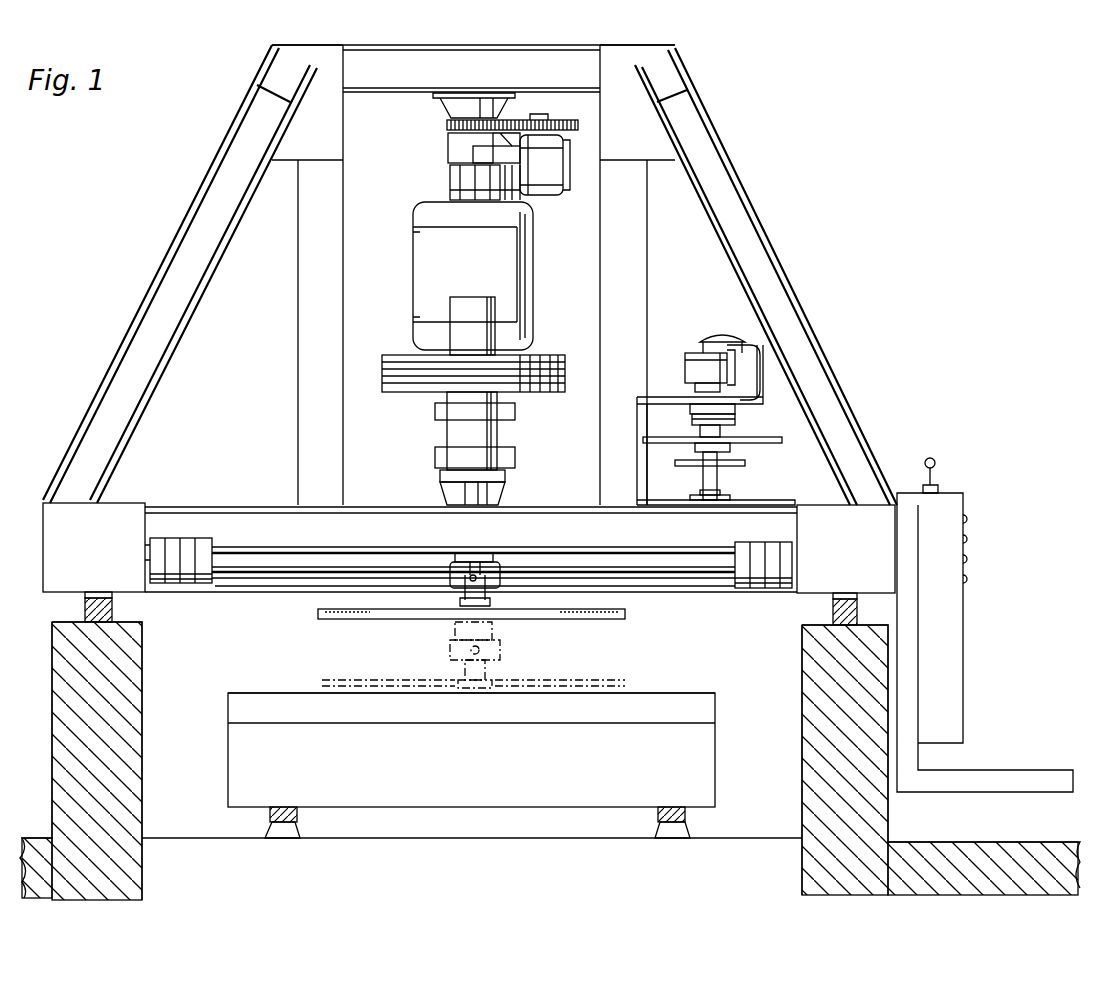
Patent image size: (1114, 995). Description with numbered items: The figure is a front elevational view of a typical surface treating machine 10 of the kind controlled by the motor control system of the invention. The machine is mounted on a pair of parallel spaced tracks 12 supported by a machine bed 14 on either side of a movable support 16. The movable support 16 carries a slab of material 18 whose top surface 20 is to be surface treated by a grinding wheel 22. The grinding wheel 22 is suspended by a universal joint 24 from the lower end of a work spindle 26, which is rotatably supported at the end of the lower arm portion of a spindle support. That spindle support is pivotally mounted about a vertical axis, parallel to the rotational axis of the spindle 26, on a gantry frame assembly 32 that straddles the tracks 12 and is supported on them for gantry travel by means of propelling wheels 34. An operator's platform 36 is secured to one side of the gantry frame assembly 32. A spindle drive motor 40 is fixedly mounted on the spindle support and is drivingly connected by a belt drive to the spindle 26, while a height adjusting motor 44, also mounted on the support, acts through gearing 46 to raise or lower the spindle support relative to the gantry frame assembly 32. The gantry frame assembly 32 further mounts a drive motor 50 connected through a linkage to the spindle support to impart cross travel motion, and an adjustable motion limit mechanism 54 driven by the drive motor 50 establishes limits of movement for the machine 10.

The surface treating machine 10 is at (182, 176).
The tracks 12 is at (832, 604).
The machine bed 14 is at (860, 722).
The movable support 16 is at (228, 760).
The slab of material 18 is at (256, 700).
The top surface 20 is at (287, 692).
The grinding wheel 22 is at (566, 618).
The universal joint 24 is at (502, 572).
The work spindle 26 is at (478, 313).
The gantry frame assembly 32 is at (731, 152).
The propelling wheels 34 is at (838, 593).
The operator's platform 36 is at (945, 505).
The spindle drive motor 40 is at (428, 261).
The height adjusting motor 44 is at (570, 160).
The gearing 46 is at (447, 126).
The drive motor 50 is at (690, 366).
The adjustable motion limit mechanism 54 is at (758, 443).